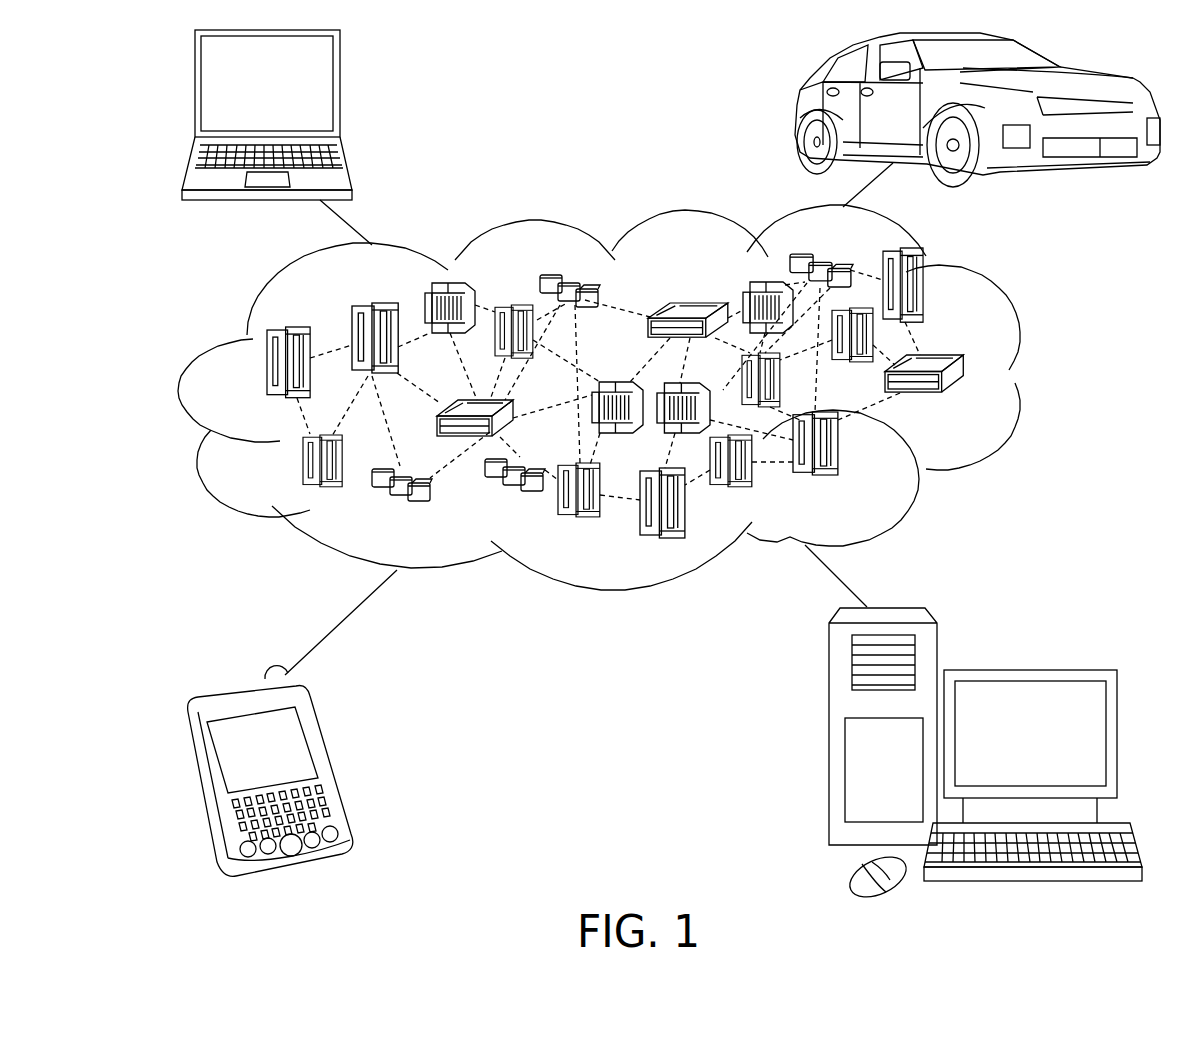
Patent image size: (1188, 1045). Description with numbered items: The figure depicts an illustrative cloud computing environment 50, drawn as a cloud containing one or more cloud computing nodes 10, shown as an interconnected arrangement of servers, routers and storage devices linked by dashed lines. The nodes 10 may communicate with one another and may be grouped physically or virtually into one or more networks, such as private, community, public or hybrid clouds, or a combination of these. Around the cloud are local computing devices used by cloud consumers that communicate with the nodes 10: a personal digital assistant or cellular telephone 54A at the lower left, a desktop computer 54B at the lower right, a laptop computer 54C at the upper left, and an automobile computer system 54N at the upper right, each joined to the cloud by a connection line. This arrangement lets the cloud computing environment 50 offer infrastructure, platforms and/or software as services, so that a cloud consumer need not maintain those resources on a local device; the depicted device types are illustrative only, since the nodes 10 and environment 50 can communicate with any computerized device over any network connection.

The cloud computing nodes 10 is at (966, 403).
The cloud computing environment 50 is at (1030, 372).
The personal digital assistant or cellular telephone 54A is at (332, 766).
The desktop computer 54B is at (1028, 670).
The laptop computer 54C is at (341, 83).
The automobile computer system 54N is at (797, 108).